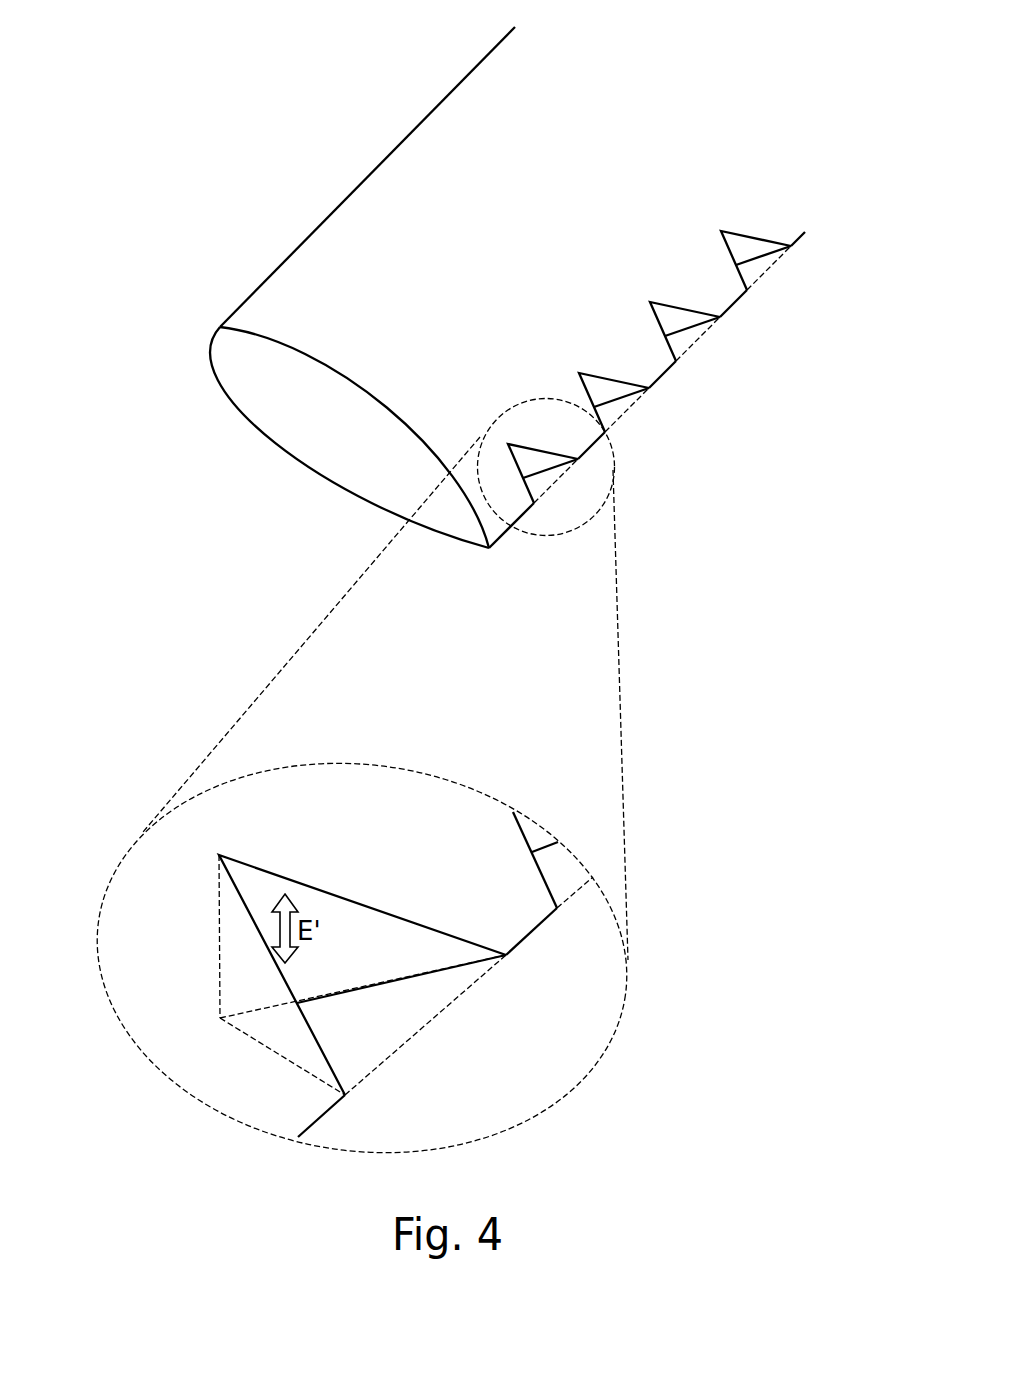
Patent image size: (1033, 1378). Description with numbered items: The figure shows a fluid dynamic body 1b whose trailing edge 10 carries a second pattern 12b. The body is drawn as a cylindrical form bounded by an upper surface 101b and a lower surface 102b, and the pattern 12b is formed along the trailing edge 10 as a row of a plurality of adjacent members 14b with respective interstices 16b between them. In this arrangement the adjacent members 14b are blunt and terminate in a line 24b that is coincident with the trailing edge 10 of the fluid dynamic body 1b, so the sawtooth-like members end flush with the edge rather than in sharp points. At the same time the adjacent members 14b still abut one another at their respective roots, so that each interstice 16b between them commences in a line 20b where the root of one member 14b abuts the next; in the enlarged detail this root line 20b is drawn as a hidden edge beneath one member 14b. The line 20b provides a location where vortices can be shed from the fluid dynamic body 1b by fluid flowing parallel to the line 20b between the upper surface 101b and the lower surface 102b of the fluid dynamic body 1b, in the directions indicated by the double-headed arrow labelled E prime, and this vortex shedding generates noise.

The fluid dynamic body 1b is at (367, 295).
The upper surface 101b is at (494, 170).
The lower surface 102b is at (330, 438).
The second pattern 12b is at (549, 398).
The adjacent members 14b is at (604, 292).
The interstices 16b is at (683, 338).
The line 24b is at (665, 375).
The trailing edge 10 is at (772, 258).
The line 20b is at (220, 922).